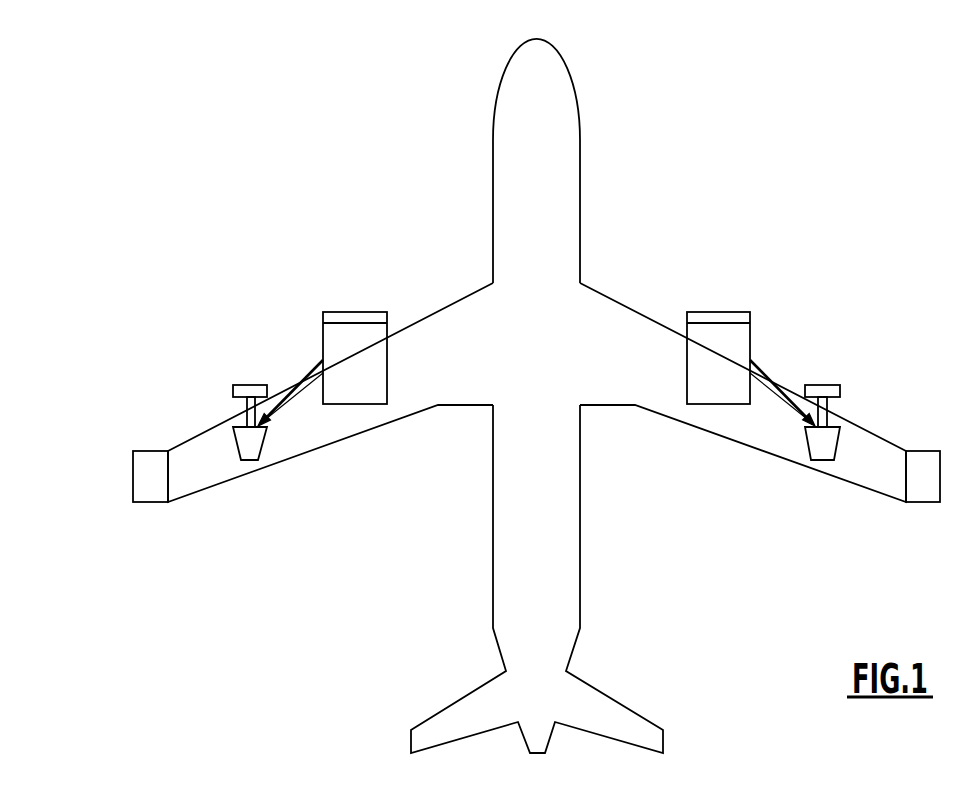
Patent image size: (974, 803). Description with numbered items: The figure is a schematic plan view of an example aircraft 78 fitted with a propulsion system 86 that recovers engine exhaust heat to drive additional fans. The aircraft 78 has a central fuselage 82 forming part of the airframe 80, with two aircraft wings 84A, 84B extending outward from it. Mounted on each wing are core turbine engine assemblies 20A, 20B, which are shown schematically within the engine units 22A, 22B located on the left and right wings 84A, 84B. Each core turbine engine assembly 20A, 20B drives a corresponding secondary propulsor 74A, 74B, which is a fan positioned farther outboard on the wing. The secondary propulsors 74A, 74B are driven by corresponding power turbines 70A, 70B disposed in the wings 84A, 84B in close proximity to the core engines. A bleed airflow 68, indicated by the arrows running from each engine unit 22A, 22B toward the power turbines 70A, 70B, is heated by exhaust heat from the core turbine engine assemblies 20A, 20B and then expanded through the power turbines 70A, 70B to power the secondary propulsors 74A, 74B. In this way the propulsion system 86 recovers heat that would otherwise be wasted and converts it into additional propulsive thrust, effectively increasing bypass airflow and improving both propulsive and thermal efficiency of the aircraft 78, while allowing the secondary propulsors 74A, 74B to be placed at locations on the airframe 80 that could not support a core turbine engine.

The aircraft 78 is at (860, 122).
The airframe 80 is at (581, 173).
The fuselage 82 is at (553, 242).
The aircraft wing 84A is at (301, 430).
The aircraft wing 84B is at (617, 315).
The engine nacelle 22A is at (368, 306).
The engine nacelle 22B is at (735, 306).
The bleed airflow 68 is at (311, 373).
The secondary propulsor 74A is at (231, 389).
The secondary propulsor 74B is at (842, 391).
The power turbine 70A is at (233, 439).
The power turbine 70B is at (822, 452).
The core turbine engine assembly 20A is at (355, 387).
The core turbine engine assembly 20B is at (717, 387).
The propulsion system 86 is at (153, 281).